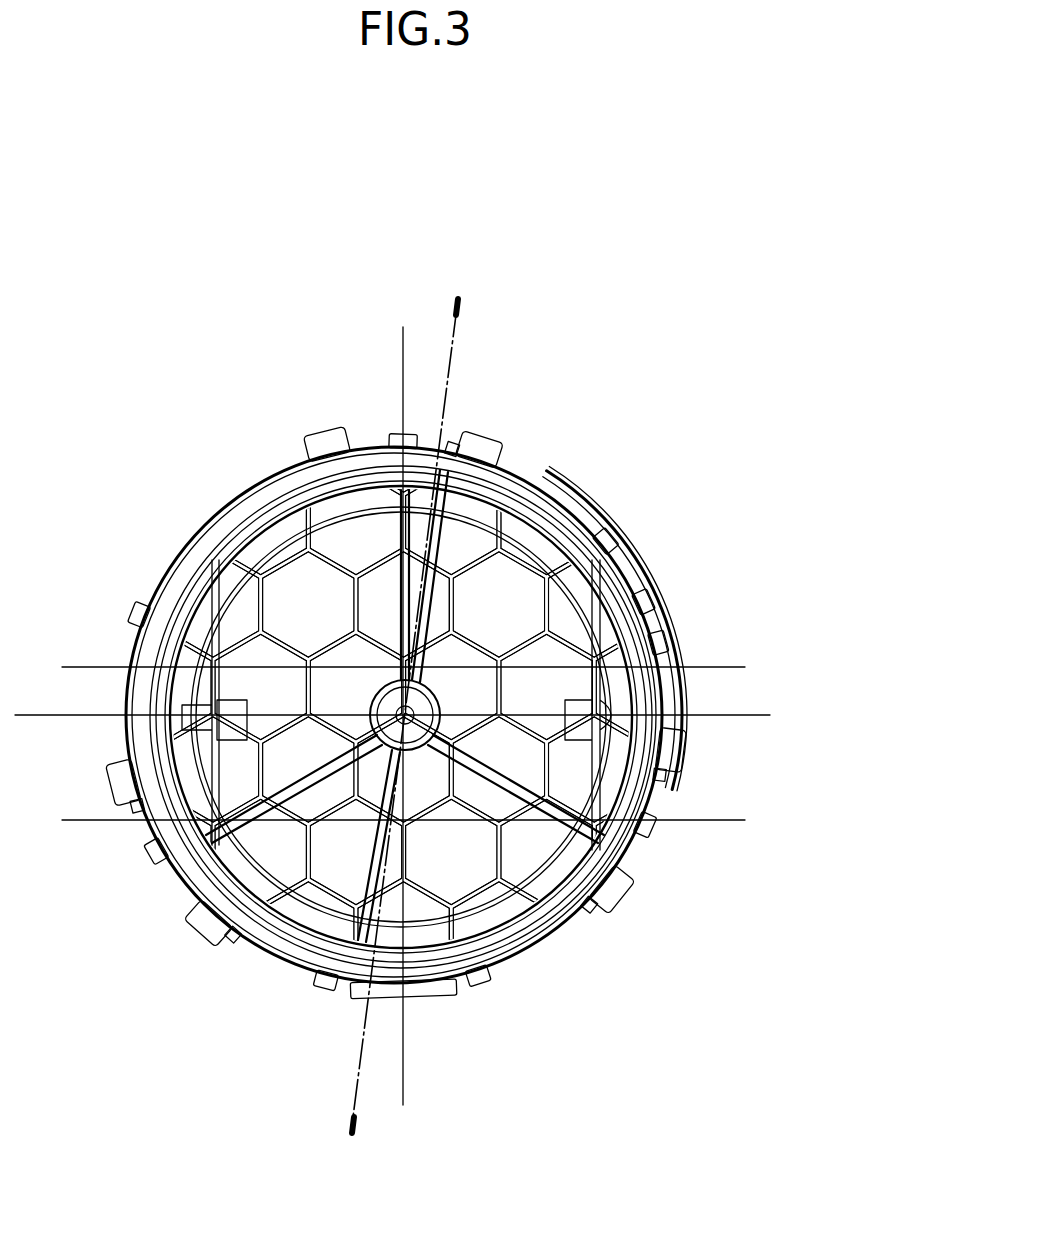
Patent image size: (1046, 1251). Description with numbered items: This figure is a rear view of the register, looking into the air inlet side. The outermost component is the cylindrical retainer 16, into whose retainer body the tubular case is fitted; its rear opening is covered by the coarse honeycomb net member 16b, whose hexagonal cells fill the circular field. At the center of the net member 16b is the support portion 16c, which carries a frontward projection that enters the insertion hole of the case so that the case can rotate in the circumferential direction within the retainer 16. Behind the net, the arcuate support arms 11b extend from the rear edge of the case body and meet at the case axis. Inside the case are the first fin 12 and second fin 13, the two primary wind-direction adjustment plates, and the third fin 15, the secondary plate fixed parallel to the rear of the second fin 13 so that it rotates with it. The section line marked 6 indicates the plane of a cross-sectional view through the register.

The section line 6- 6 is at (464, 307).
The support arms 11b is at (432, 542).
The first fin 12 is at (575, 600).
The second fin 13 is at (235, 768).
The third fin 15 is at (308, 916).
The retainer 16 is at (622, 882).
The net member 16b is at (252, 598).
The support portion 16c is at (385, 710).